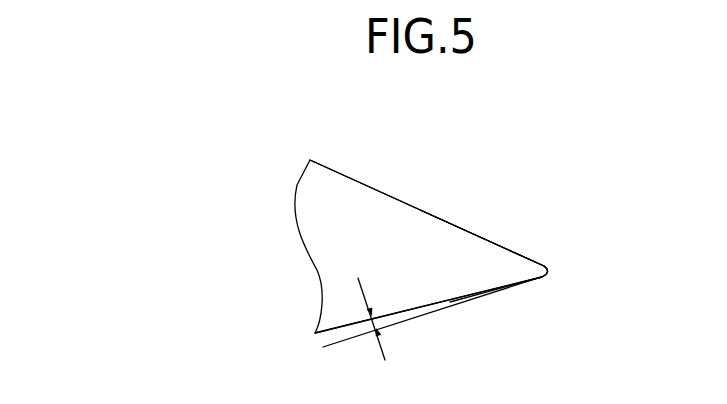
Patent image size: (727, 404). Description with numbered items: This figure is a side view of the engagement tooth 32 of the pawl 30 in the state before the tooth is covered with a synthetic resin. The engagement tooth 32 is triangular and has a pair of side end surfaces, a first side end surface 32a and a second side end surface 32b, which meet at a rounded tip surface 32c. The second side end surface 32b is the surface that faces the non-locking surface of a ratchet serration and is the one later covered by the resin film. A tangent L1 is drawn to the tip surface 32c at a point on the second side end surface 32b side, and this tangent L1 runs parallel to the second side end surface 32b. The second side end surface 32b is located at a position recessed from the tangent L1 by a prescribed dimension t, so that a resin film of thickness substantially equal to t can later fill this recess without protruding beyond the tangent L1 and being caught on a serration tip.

The pawl 30 is at (304, 133).
The engagement tooth 32 is at (520, 209).
The first side end surface 32a is at (424, 207).
The second side end surface 32b is at (433, 303).
The tip surface 32c is at (549, 272).
The tangent L1 is at (481, 302).
The recessed dimension t is at (371, 319).